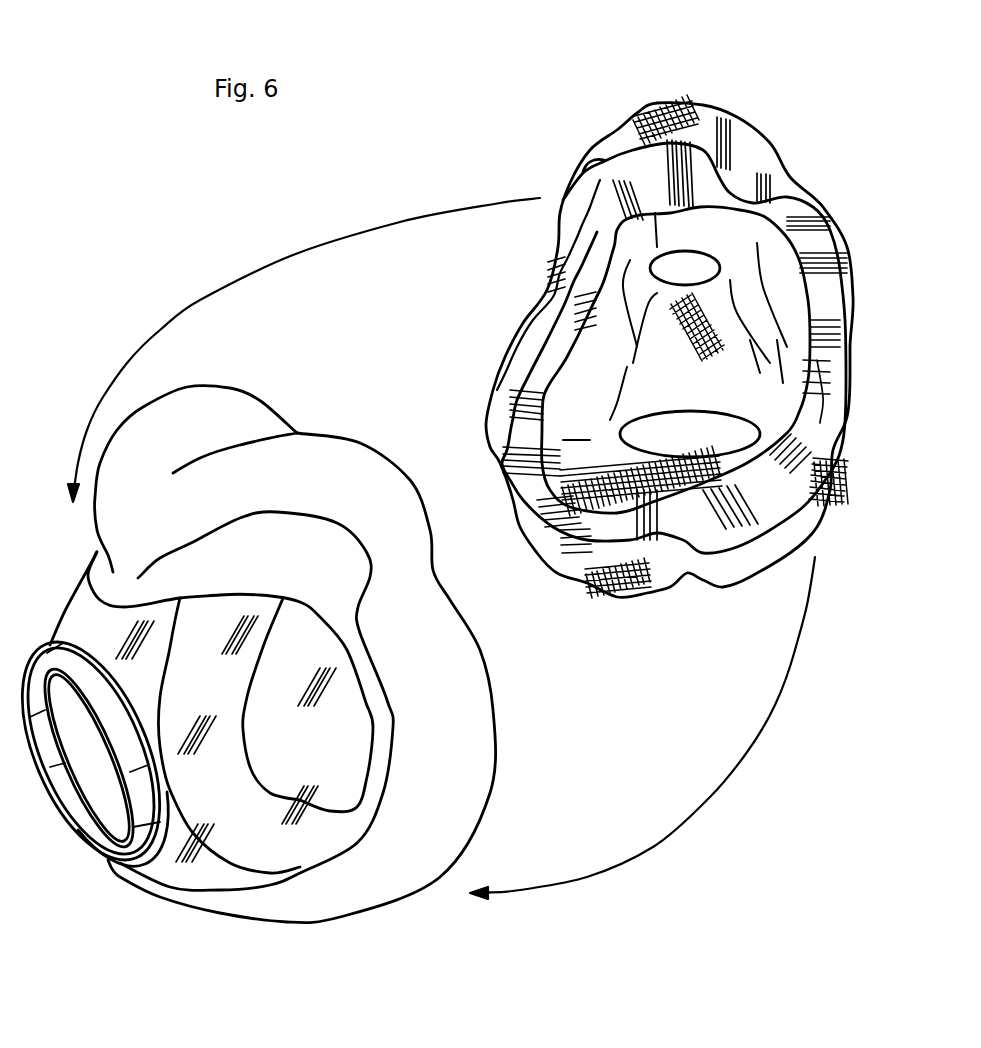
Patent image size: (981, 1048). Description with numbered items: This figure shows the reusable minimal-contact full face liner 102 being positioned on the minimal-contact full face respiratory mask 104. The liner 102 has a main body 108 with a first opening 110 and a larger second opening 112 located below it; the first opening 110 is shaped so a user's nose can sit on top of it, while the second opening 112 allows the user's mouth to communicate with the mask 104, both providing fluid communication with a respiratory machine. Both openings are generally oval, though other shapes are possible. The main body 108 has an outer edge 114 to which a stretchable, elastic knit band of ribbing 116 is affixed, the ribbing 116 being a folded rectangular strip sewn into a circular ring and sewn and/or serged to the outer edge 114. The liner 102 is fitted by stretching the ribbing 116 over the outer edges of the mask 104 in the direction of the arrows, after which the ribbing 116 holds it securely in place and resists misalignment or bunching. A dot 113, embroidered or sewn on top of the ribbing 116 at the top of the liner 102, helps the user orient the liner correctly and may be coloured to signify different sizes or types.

The reusable minimal-contact full face liner 102 is at (708, 309).
The minimal-contact full face respiratory mask 104 is at (210, 868).
The main body 108 is at (686, 393).
The first opening 110 is at (690, 268).
The second opening 112 is at (716, 437).
The dot 113 is at (698, 195).
The outer edge 114 is at (753, 157).
The band of ribbing 116 is at (832, 307).